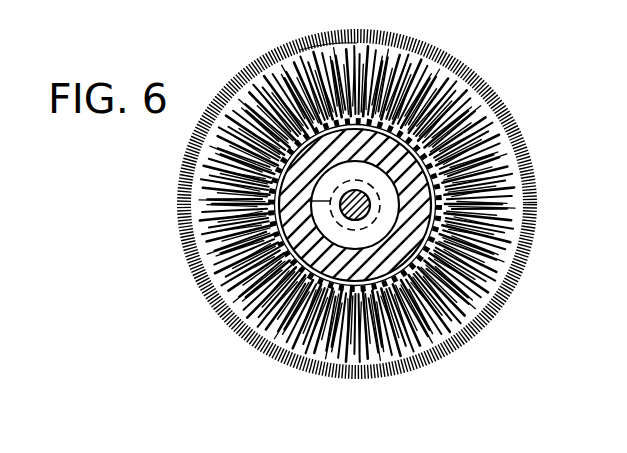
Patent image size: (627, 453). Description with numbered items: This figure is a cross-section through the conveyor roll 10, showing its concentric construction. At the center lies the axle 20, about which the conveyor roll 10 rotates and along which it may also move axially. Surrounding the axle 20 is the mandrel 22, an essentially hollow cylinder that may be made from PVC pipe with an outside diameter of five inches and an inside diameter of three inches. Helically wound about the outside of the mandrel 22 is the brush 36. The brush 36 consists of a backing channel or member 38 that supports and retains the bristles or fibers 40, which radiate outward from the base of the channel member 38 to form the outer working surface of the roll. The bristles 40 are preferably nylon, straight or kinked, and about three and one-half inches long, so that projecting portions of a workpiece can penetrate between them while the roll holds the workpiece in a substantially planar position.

The conveyor roll 10 is at (537, 227).
The axle 20 is at (200, 248).
The mandrel 22 is at (237, 323).
The brush 36 is at (572, 94).
The backing channel member 38 is at (520, 138).
The bristles 40 is at (298, 43).